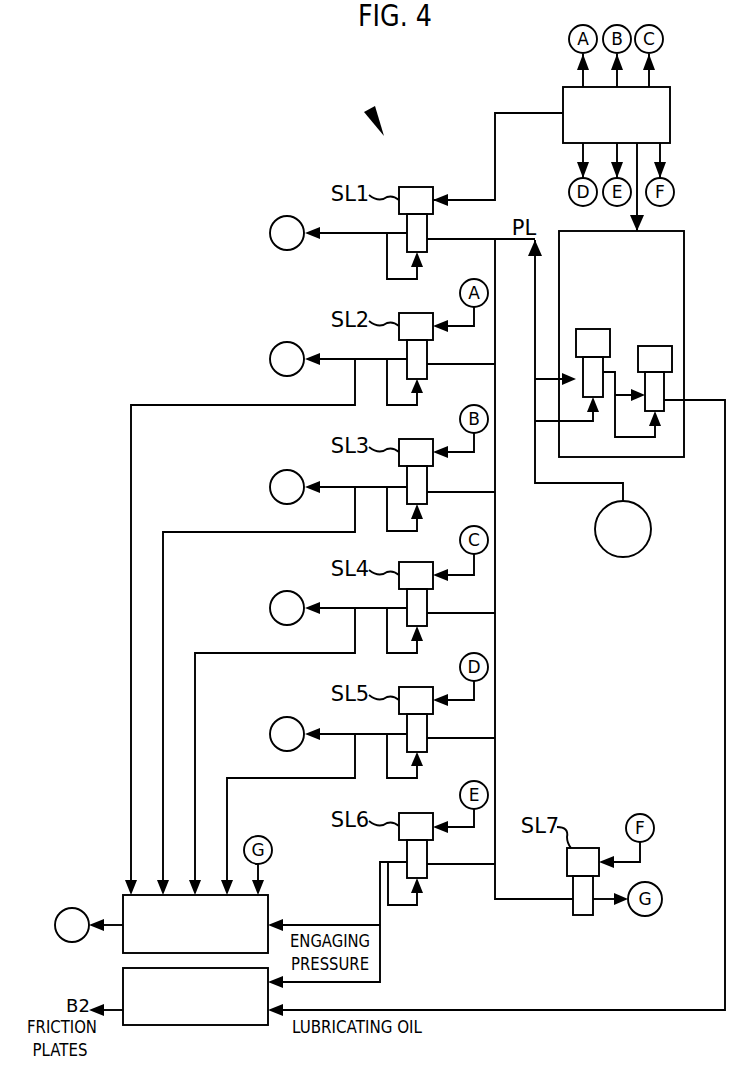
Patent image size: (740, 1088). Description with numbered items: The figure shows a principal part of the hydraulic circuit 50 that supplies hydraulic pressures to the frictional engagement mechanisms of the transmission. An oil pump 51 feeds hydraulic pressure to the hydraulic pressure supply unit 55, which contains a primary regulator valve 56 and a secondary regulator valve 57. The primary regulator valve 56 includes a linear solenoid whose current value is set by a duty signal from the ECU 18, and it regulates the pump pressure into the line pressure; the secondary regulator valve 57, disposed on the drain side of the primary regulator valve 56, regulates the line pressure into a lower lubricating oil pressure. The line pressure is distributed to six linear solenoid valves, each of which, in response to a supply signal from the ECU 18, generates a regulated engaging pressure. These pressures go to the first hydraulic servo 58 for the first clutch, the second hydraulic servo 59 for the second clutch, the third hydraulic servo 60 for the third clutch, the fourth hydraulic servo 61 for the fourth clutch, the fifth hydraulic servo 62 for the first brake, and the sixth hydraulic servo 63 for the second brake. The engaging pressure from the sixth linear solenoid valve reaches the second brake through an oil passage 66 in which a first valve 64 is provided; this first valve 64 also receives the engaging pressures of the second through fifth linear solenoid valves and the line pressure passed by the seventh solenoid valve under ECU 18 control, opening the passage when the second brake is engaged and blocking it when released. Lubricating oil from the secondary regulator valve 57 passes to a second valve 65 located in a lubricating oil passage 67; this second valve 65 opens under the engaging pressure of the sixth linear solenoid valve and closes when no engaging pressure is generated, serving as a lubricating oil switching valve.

The ECU 18 is at (670, 99).
The hydraulic circuit 50 is at (371, 108).
The oil pump 51 is at (651, 529).
The hydraulic pressure supply unit 55 is at (669, 230).
The primary regulator valve 56 is at (600, 329).
The secondary regulator valve 57 is at (659, 344).
The first hydraulic servo 58 is at (272, 238).
The second hydraulic servo 59 is at (272, 364).
The third hydraulic servo 60 is at (272, 488).
The fourth hydraulic servo 61 is at (272, 608).
The fifth hydraulic servo 62 is at (272, 733).
The sixth hydraulic servo 63 is at (72, 908).
The first valve 64 is at (270, 900).
The second valve 65 is at (123, 986).
The oil passage 66 is at (117, 919).
The lubricating oil passage 67 is at (120, 1022).